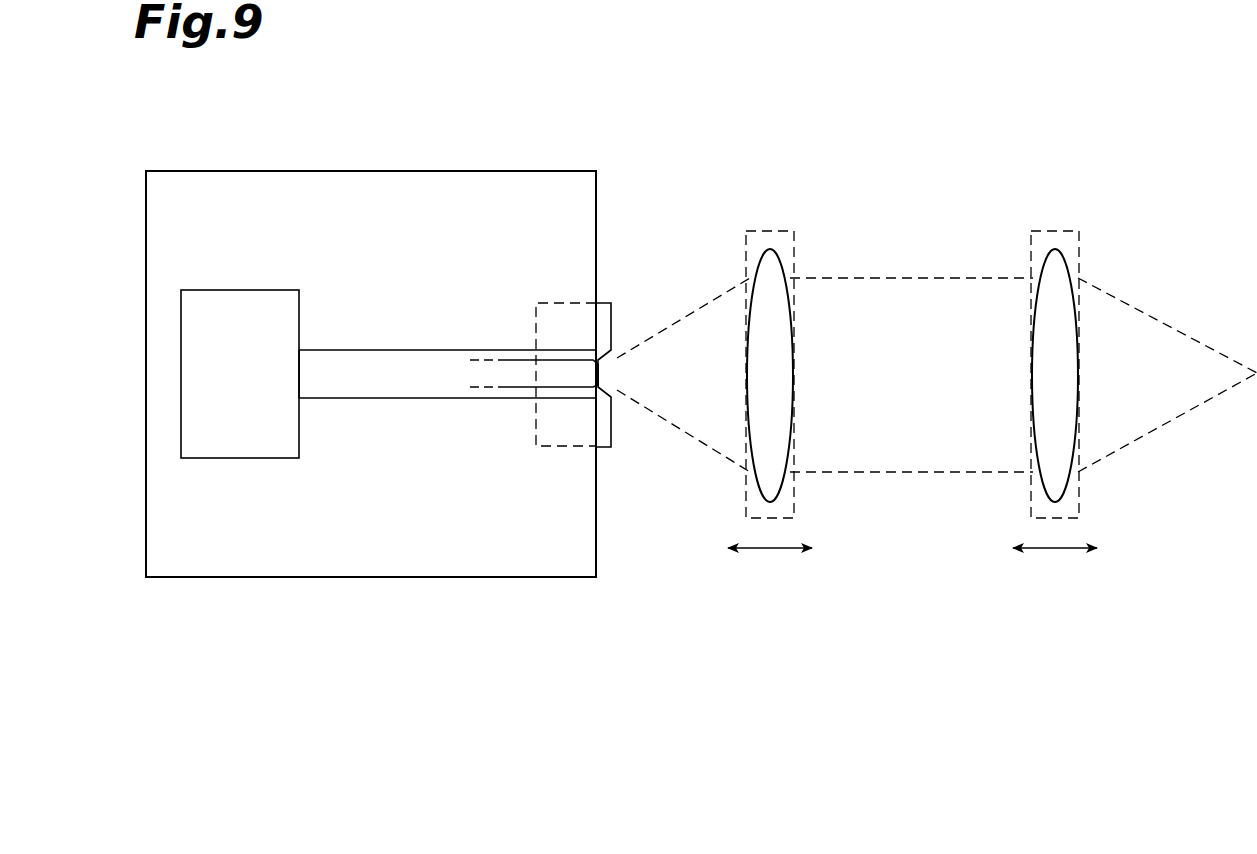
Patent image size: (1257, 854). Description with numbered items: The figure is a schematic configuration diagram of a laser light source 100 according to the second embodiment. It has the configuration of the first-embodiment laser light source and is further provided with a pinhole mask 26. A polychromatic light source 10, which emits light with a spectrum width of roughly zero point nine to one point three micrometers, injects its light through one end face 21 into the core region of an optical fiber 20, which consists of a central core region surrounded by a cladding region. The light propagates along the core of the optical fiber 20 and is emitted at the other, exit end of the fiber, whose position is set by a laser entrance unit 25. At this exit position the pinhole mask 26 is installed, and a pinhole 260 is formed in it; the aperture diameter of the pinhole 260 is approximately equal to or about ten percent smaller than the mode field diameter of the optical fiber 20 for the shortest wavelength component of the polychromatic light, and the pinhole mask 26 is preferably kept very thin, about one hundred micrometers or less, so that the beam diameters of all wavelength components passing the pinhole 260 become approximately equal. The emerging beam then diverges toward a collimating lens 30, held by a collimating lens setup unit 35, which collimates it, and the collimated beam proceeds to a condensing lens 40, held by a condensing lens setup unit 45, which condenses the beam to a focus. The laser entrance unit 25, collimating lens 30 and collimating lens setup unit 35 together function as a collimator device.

The laser light source 100 is at (718, 128).
The light source 10 is at (226, 290).
The optical fiber 20 is at (417, 350).
The end face of the optical fiber 21 is at (298, 368).
The laser entrance unit 25 is at (563, 447).
The pinhole mask 26 is at (612, 318).
The pinhole 260 is at (610, 378).
The collimating lens 30 is at (757, 483).
The collimating lens setup unit 35 is at (770, 231).
The condensing lens 40 is at (1065, 262).
The condensing lens setup unit 45 is at (1060, 231).